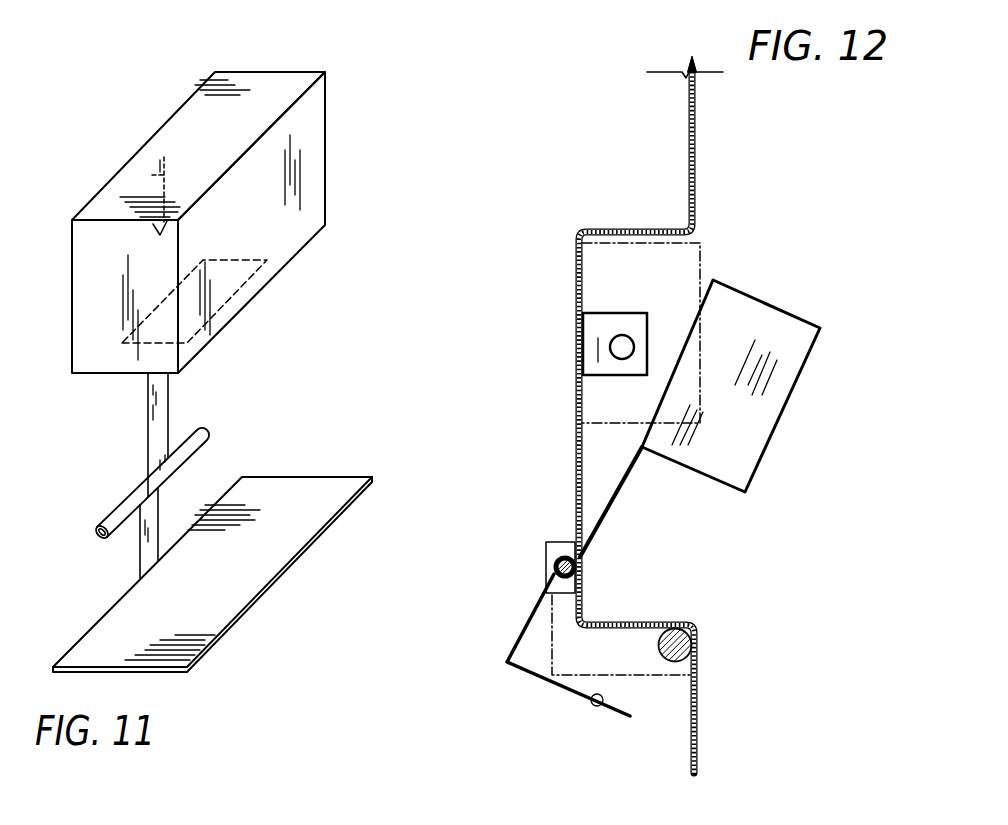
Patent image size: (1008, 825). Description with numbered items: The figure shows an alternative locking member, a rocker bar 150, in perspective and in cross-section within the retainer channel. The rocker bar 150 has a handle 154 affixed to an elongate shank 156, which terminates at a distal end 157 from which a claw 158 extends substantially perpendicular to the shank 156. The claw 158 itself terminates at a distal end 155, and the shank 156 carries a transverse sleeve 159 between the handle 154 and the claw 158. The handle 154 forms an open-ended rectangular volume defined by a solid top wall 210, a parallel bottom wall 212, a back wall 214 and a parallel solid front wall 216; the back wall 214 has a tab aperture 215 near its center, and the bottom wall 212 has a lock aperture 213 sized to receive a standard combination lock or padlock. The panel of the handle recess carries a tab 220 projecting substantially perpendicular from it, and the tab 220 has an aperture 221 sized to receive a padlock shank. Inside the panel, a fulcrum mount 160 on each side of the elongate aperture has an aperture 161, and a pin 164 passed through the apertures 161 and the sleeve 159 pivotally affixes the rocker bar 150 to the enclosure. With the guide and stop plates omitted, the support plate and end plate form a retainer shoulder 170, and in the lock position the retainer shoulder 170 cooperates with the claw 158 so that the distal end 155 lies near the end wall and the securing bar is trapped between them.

In FIG. 11, the rocker bar 150 is at (232, 218).
In FIG. 12, the rocker bar 150 is at (773, 387).
In FIG. 11, the top wall 210 is at (275, 85).
In FIG. 12, the top wall 210 is at (767, 302).
In FIG. 11, the bottom wall 212 is at (110, 374).
In FIG. 12, the bottom wall 212 is at (730, 492).
In FIG. 11, the lock aperture 213 is at (236, 288).
In FIG. 12, the back wall 214 is at (688, 322).
In FIG. 11, the tab aperture 215 is at (150, 177).
In FIG. 11, the front wall 216 is at (312, 181).
In FIG. 12, the front wall 216 is at (793, 413).
In FIG. 11, the handle 154 is at (312, 253).
In FIG. 12, the handle 154 is at (778, 452).
In FIG. 11, the distal end of claw 155 is at (280, 573).
In FIG. 12, the distal end of claw 155 is at (593, 706).
In FIG. 11, the shank 156 is at (165, 423).
In FIG. 12, the shank 156 is at (618, 502).
In FIG. 11, the distal end of shank 157 is at (140, 577).
In FIG. 11, the claw 158 is at (290, 486).
In FIG. 12, the claw 158 is at (537, 677).
In FIG. 11, the transverse sleeve 159 is at (112, 508).
In FIG. 12, the transverse sleeve 159 is at (573, 553).
In FIG. 12, the fulcrum mount 160 is at (545, 548).
In FIG. 12, the mount aperture 161 is at (553, 564).
In FIG. 12, the pin 164 is at (546, 597).
In FIG. 12, the tab 220 is at (598, 345).
In FIG. 12, the tab aperture (padlock hole) 221 is at (622, 336).
In FIG. 12, the retainer shoulder 170 is at (704, 636).